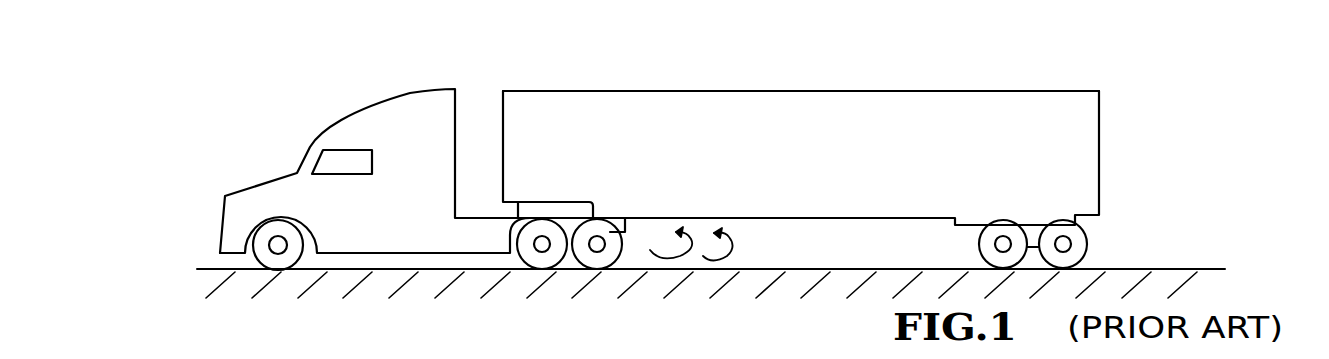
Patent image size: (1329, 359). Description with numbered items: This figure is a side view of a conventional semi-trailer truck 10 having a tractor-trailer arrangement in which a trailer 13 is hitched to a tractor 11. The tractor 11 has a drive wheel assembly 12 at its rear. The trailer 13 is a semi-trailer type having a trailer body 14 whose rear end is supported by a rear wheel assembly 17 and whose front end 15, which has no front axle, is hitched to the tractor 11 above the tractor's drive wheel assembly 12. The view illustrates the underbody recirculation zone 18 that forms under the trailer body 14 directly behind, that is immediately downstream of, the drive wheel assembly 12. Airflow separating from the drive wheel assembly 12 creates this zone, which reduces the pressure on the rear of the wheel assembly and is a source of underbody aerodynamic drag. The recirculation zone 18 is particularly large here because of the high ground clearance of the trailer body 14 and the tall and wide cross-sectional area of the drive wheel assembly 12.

The semi-trailer truck 10 is at (279, 150).
The tractor 11 is at (397, 217).
The drive wheel assembly 12 is at (588, 257).
The trailer 13 is at (787, 79).
The trailer body 14 is at (837, 139).
The front end 15 is at (521, 92).
The rear wheel assembly 17 is at (1090, 238).
The underbody recirculation zone 18 is at (730, 243).